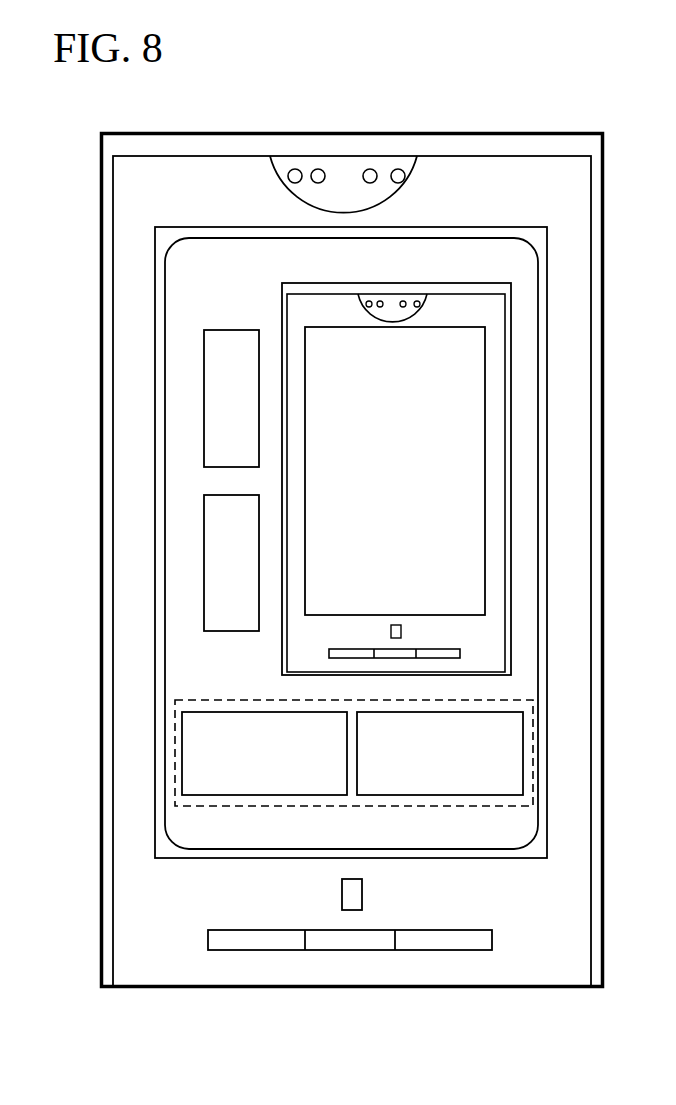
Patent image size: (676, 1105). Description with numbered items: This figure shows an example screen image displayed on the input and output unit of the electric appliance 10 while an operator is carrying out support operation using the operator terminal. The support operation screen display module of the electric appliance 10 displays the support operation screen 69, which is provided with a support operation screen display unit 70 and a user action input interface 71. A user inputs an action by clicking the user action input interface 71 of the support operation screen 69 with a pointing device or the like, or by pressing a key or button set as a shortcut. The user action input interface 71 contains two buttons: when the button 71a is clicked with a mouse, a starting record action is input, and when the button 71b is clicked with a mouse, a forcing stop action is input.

The electric appliance 10 is at (533, 132).
The support operation screen 69 is at (478, 240).
The support operation screen display unit 70 is at (430, 390).
The user action input interface 71 is at (205, 700).
The button 71a is at (268, 796).
The button 71b is at (447, 796).